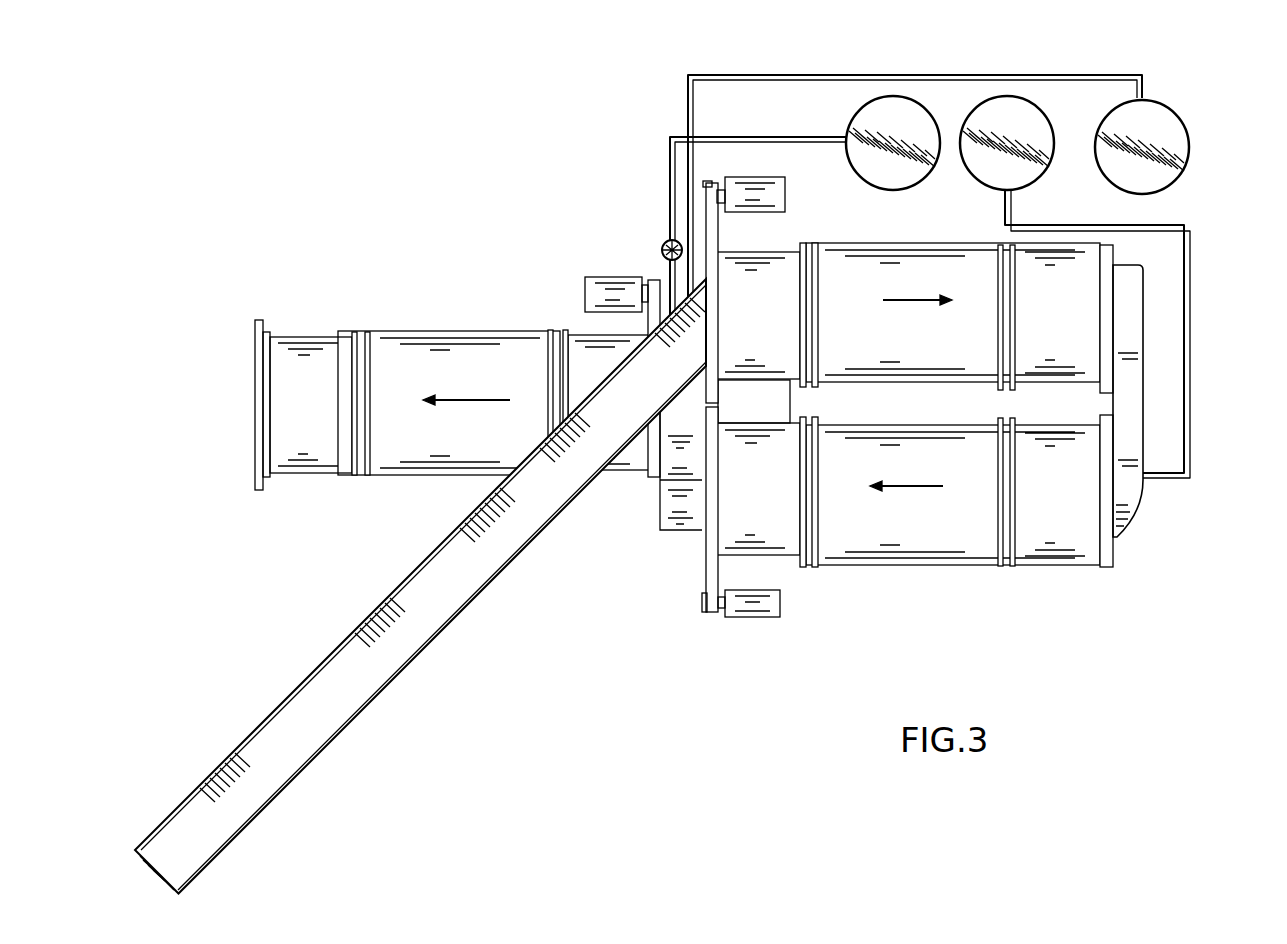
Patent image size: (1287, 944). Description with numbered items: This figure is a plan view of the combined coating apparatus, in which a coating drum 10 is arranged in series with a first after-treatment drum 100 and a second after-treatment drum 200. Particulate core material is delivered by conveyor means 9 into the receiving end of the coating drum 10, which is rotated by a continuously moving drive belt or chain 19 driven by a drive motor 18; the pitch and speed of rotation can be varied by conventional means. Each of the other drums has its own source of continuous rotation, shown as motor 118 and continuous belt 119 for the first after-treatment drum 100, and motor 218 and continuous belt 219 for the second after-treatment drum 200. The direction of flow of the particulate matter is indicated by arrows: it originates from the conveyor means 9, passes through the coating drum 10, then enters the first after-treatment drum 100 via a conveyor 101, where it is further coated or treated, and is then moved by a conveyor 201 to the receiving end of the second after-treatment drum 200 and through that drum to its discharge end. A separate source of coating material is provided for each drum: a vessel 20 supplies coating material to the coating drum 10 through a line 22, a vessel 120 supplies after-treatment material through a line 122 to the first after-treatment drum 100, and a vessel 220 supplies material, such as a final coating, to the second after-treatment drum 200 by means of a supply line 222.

The conveyor means 9 is at (473, 578).
The coating drum 10 is at (890, 342).
The drive motor 18 is at (785, 192).
The drive belt or chain 19 is at (718, 233).
The vessel 20 is at (893, 130).
The line 22 is at (716, 137).
The first after-treatment drum 100 is at (984, 527).
The conveyor 101 is at (1143, 378).
The motor 118 is at (762, 608).
The continuous belt 119 is at (712, 524).
The vessel 120 is at (1017, 110).
The line 122 is at (1188, 318).
The second after-treatment drum 200 is at (512, 389).
The conveyor 201 is at (668, 498).
The motor 218 is at (585, 295).
The continuous belt 219 is at (650, 312).
The vessel 220 is at (1150, 112).
The supply line 222 is at (812, 75).